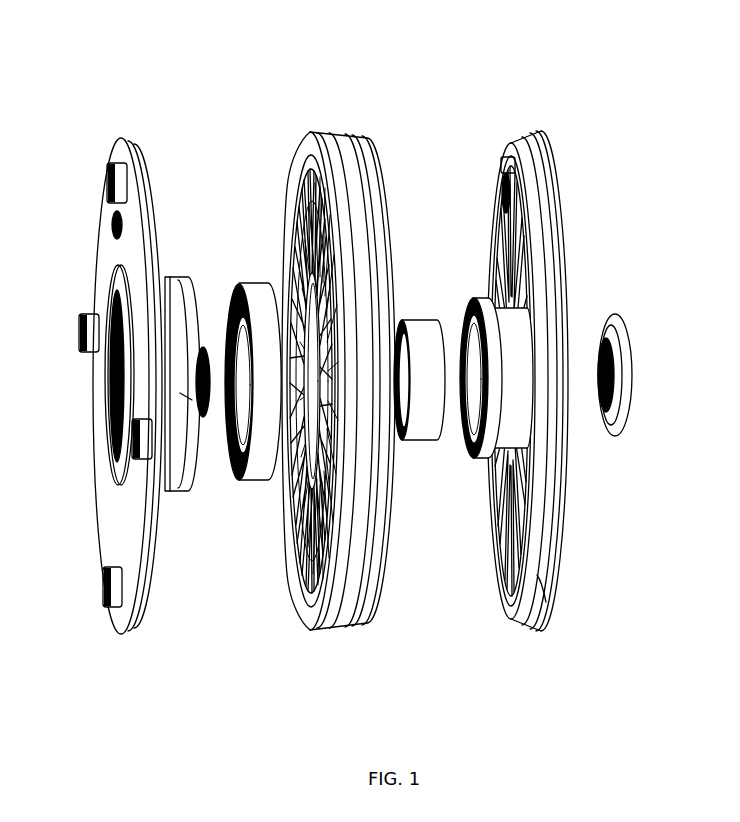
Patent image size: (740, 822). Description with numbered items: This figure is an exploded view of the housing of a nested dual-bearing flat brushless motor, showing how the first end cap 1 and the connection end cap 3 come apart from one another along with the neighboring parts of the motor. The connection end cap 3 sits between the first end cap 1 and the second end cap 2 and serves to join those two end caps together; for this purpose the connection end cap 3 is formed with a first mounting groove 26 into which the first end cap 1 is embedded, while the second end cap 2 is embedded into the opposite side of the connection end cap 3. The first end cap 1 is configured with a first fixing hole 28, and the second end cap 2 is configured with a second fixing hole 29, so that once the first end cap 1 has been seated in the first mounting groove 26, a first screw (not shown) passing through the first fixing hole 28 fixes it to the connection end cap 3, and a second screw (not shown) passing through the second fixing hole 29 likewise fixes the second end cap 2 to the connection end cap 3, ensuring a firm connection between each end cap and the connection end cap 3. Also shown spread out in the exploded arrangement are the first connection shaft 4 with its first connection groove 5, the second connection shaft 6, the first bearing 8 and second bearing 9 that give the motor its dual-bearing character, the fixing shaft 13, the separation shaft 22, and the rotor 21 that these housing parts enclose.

The first end cap 1 is at (102, 268).
The second end cap 2 is at (575, 365).
The connection end cap 3 is at (300, 376).
The first connection shaft 4 is at (195, 165).
The first connection groove 5 is at (473, 298).
The second connection shaft 6 is at (510, 365).
The first bearing 8 is at (426, 390).
The second bearing 9 is at (262, 413).
The fixing shaft 13 is at (623, 375).
The rotor 21 is at (302, 612).
The separation shaft 22 is at (190, 403).
The first mounting groove 26 is at (290, 172).
The first fixing hole 28 is at (103, 592).
The second fixing hole 29 is at (547, 580).